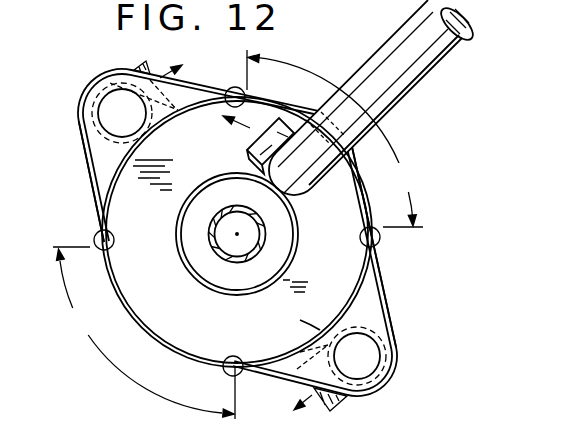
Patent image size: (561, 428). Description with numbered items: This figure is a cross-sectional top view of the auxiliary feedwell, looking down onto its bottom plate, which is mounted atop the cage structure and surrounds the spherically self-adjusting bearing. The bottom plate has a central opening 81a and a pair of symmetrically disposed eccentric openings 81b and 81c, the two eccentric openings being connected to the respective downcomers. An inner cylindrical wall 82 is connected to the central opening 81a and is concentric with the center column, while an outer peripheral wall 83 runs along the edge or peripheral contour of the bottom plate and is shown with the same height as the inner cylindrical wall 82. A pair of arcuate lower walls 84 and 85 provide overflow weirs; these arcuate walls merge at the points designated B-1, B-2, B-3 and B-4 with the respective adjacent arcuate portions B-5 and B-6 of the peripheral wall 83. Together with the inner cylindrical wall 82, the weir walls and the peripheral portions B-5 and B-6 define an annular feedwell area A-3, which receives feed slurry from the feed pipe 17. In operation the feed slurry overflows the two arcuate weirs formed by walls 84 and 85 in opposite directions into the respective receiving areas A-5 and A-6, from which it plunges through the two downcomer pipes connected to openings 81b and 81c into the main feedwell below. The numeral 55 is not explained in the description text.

The feed pipe 17 is at (420, 58).
The central bore 55 is at (211, 231).
The central opening 81a is at (270, 259).
The eccentric opening 81b is at (100, 106).
The eccentric opening 81c is at (369, 352).
The inner cylindrical wall 82 is at (297, 242).
The outer peripheral wall 83 is at (190, 84).
The arcuate lower wall 84 is at (141, 143).
The arcuate lower wall 85 is at (330, 324).
The annular feedwell area A-3 is at (200, 318).
The receiving area A-5 is at (103, 163).
The receiving area A-6 is at (372, 317).
The merge point B-1 is at (226, 104).
The merge point B-2 is at (113, 245).
The merge point B-3 is at (381, 242).
The merge point B-4 is at (236, 357).
The arcuate portion of the peripheral wall B-5 is at (335, 138).
The arcuate portion of the peripheral wall B-6 is at (144, 333).